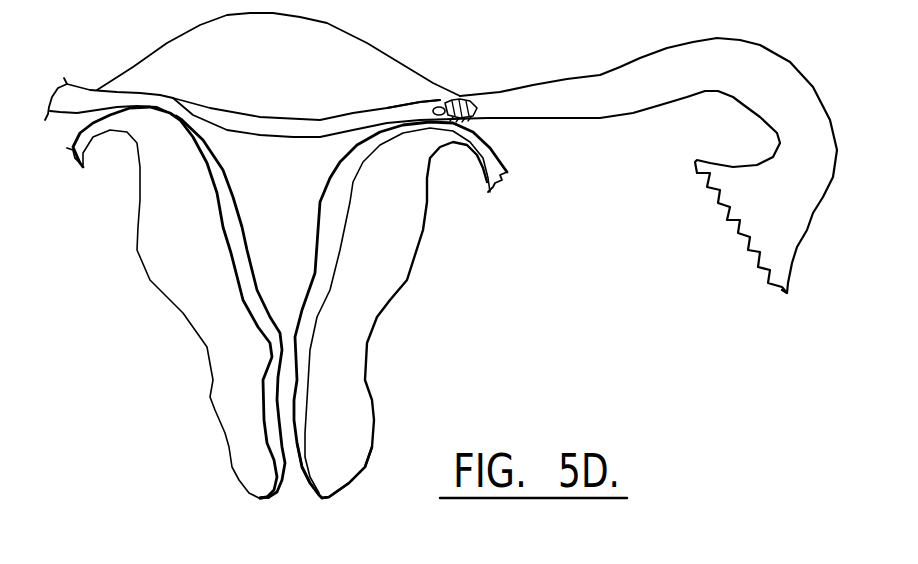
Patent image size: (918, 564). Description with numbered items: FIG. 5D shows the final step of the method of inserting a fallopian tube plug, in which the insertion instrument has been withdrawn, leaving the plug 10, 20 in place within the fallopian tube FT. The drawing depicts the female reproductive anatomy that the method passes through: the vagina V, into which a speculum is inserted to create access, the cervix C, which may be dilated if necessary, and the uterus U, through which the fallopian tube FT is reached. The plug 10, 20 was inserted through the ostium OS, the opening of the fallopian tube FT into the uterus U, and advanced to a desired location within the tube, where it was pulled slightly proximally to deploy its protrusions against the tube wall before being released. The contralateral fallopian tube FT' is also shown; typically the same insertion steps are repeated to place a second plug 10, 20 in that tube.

The contralateral fallopian tube FT' is at (249, 91).
The ostium OS is at (411, 64).
The plug 10 is at (460, 85).
The plug 20 is at (475, 87).
The fallopian tube FT is at (645, 160).
The uterus U is at (287, 302).
The cervix C is at (349, 460).
The vagina V is at (343, 516).